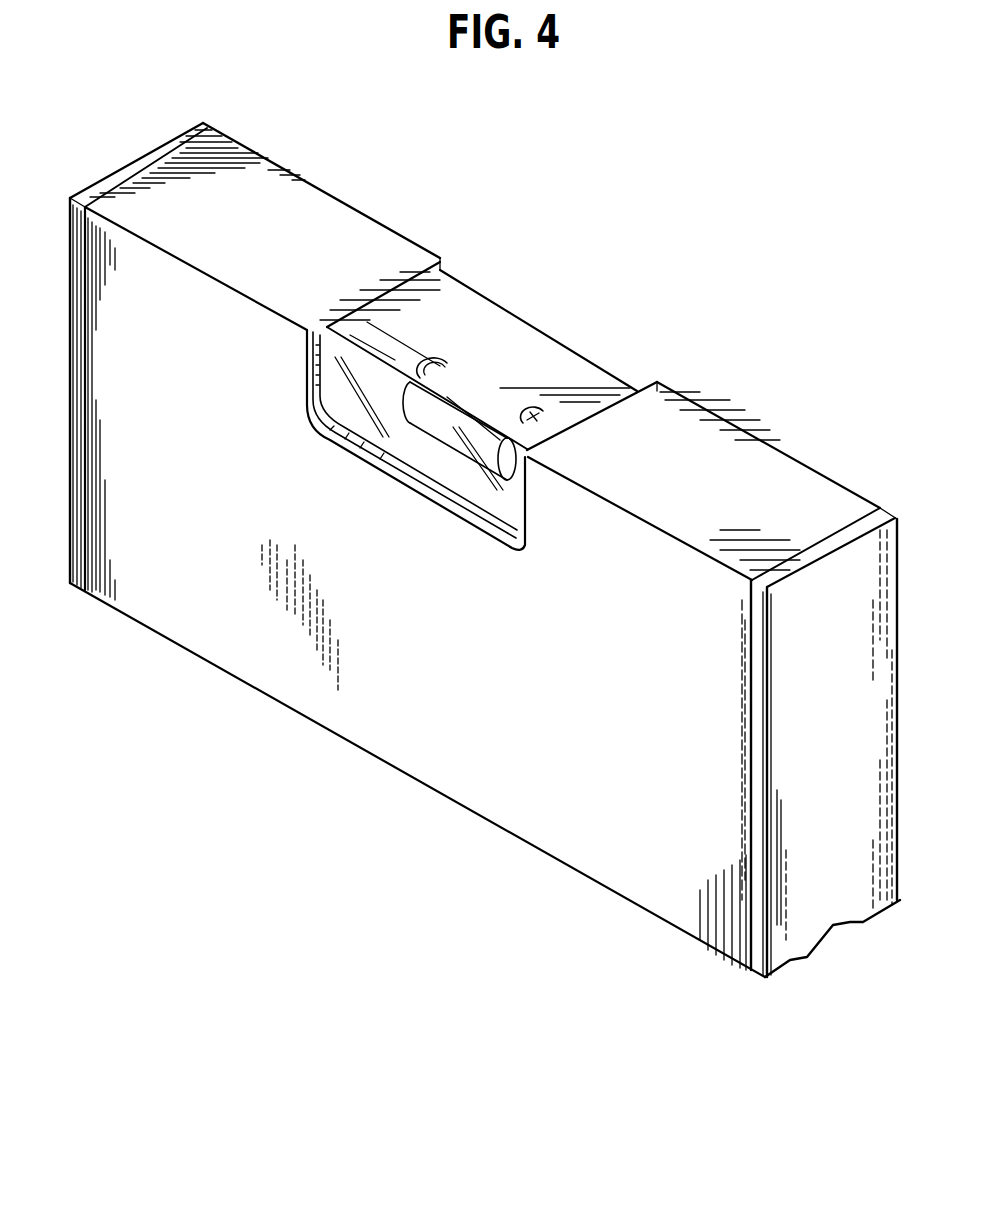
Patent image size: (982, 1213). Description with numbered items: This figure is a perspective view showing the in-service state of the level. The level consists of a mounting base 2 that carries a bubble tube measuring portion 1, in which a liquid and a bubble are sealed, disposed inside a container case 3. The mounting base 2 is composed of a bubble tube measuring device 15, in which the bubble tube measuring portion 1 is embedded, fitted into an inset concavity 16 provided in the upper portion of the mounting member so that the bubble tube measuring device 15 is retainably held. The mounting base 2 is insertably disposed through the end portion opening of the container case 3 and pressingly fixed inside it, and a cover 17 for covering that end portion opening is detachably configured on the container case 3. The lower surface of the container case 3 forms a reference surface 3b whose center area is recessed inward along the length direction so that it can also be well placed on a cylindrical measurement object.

The bubble tube measuring portion 1 is at (472, 387).
The mounting base 2 is at (597, 362).
The container case 3 is at (338, 215).
The bubble tube measuring device 15 is at (462, 305).
The inset concavity 16 is at (310, 405).
The cover 17 is at (838, 580).
The reference surface 3b is at (790, 963).